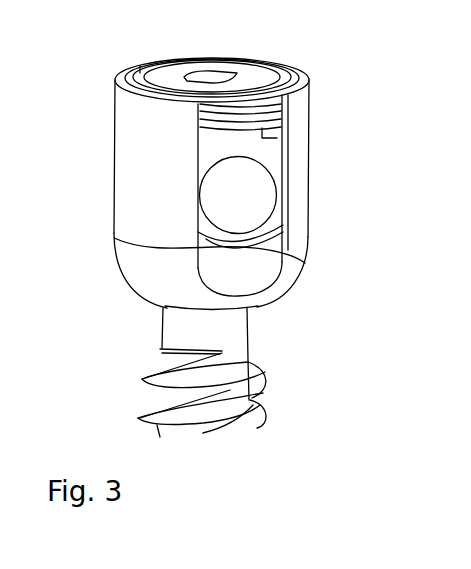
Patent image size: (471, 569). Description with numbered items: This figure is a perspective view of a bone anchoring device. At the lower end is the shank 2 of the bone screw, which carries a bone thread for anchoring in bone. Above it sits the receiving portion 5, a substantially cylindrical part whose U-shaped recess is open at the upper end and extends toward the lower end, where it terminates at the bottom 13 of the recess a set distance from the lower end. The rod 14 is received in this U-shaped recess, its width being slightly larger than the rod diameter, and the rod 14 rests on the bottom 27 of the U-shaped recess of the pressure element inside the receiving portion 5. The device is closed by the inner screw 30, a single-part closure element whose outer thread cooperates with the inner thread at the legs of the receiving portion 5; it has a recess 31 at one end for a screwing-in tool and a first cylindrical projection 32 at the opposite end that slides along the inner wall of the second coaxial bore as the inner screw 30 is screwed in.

The shank 2 is at (261, 408).
The receiving portion 5 is at (309, 167).
The bottom of the U-shaped recess 13 is at (305, 263).
The rod 14 is at (257, 201).
The bottom of the U-shaped recess of the pressure element 27 is at (195, 230).
The inner screw 30 is at (258, 73).
The recess 31 is at (210, 76).
The first cylindrical projection 32 is at (218, 141).